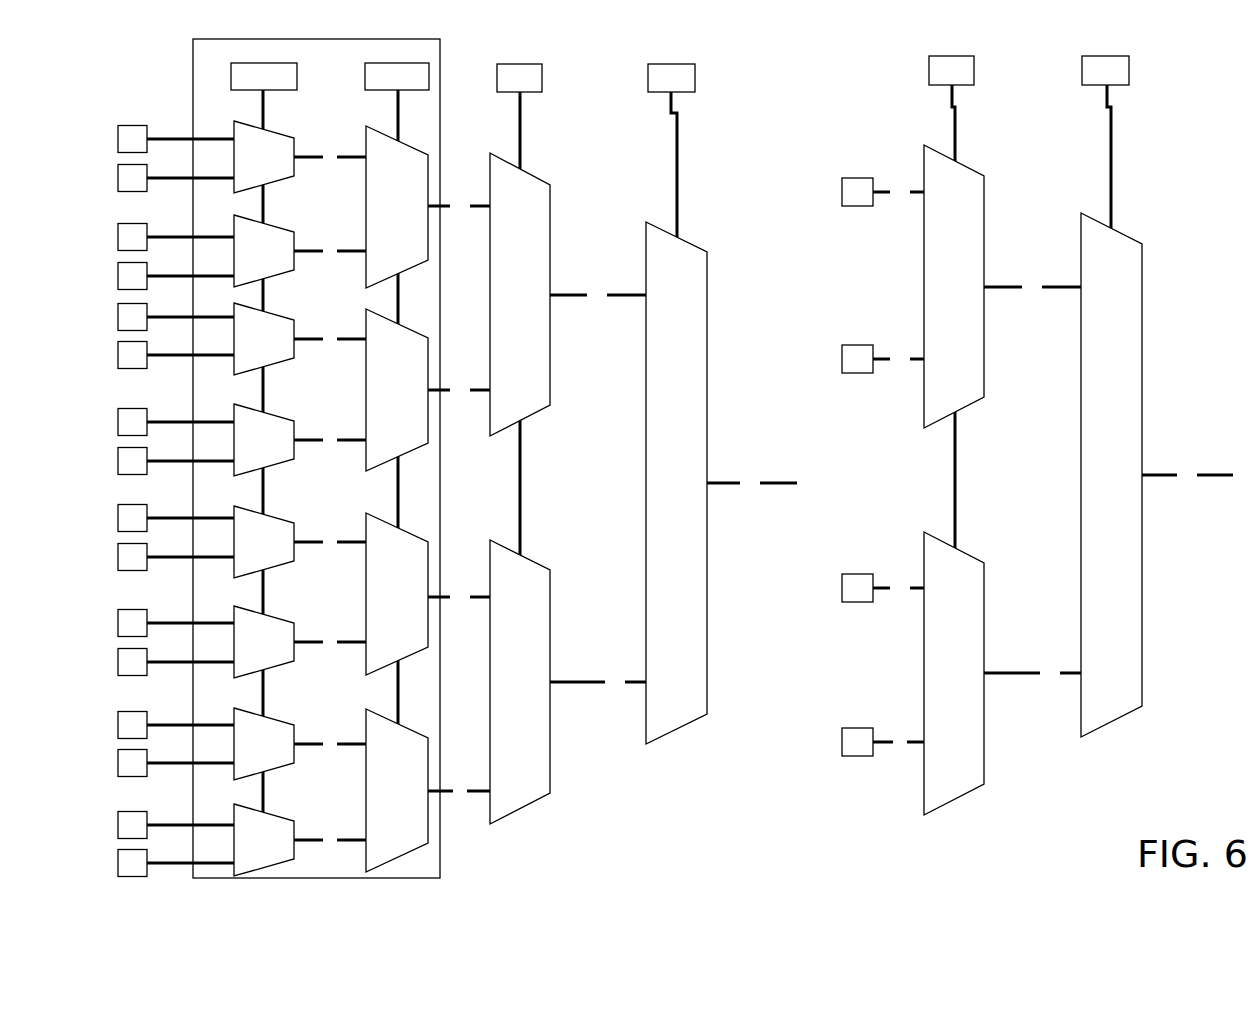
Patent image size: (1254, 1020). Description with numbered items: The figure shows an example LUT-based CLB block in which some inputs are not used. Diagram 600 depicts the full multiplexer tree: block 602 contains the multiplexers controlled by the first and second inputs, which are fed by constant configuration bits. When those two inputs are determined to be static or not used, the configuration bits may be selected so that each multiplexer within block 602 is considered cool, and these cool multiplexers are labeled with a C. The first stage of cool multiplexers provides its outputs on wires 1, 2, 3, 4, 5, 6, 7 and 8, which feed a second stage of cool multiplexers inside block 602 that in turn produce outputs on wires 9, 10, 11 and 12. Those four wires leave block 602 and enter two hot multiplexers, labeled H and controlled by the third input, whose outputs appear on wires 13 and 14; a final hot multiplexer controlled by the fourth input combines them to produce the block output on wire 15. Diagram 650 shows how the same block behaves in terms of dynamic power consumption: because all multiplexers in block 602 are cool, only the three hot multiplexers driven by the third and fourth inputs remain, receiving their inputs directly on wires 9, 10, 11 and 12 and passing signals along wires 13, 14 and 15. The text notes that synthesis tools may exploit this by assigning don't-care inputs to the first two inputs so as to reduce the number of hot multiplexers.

The diagram 600 is at (719, 100).
The block 602 is at (440, 52).
The diagram 650 is at (1151, 114).
The wire 1 is at (330, 840).
The wire 2 is at (330, 744).
The wire 3 is at (330, 642).
The wire 4 is at (330, 542).
The wire 5 is at (330, 440).
The wire 6 is at (330, 339).
The wire 7 is at (330, 251).
The wire 8 is at (330, 157).
The wire 9 is at (676, 766).
The wire 10 is at (676, 592).
The wire 11 is at (676, 374).
The wire 12 is at (676, 199).
The wire 13 is at (815, 677).
The wire 14 is at (815, 291).
The wire 15 is at (970, 479).